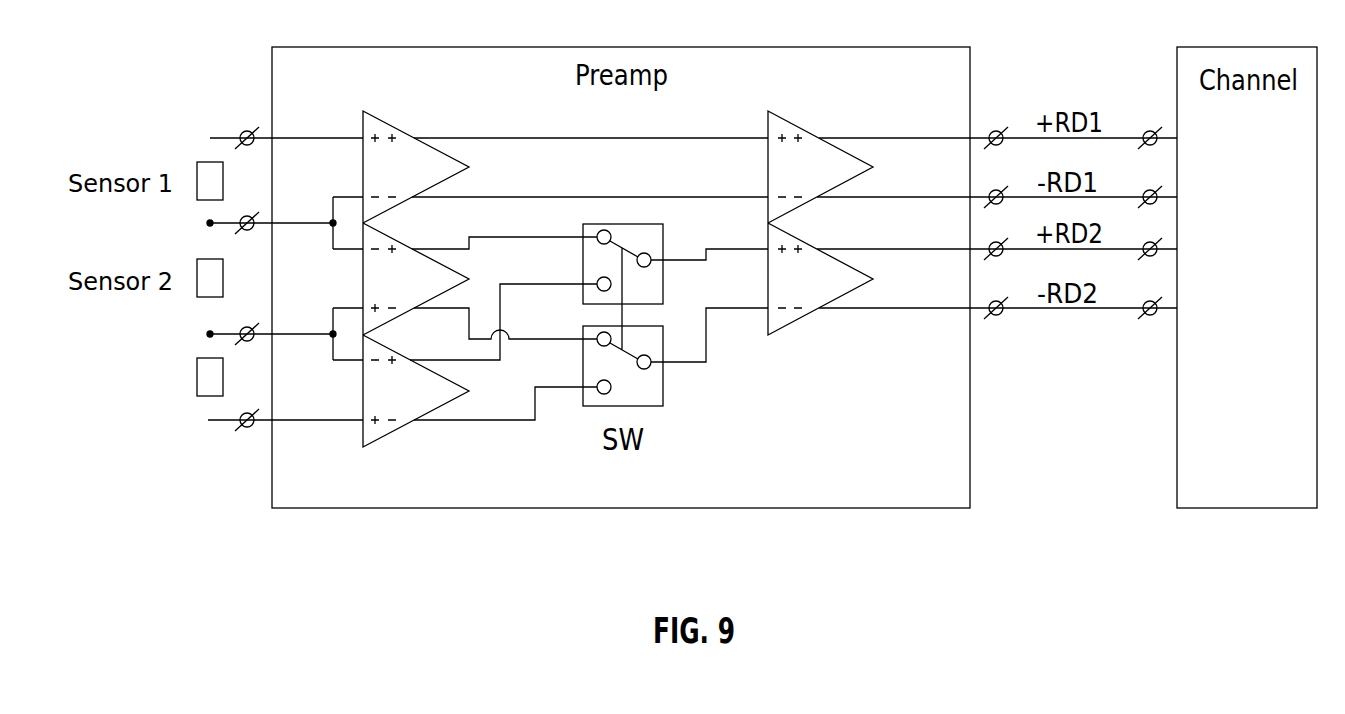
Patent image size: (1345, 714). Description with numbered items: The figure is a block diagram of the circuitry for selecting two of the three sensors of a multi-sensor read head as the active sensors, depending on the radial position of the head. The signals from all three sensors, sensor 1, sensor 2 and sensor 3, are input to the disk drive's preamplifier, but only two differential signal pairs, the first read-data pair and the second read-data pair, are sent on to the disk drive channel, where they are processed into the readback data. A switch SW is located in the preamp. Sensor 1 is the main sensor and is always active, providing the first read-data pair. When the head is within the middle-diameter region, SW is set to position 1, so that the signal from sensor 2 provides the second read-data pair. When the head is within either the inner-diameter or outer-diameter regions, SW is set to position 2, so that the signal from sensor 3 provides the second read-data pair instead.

The switch position 1 / sensor 1 is at (587, 277).
The switch position 2 / sensor 2 is at (587, 322).
The sensor 3 is at (145, 377).